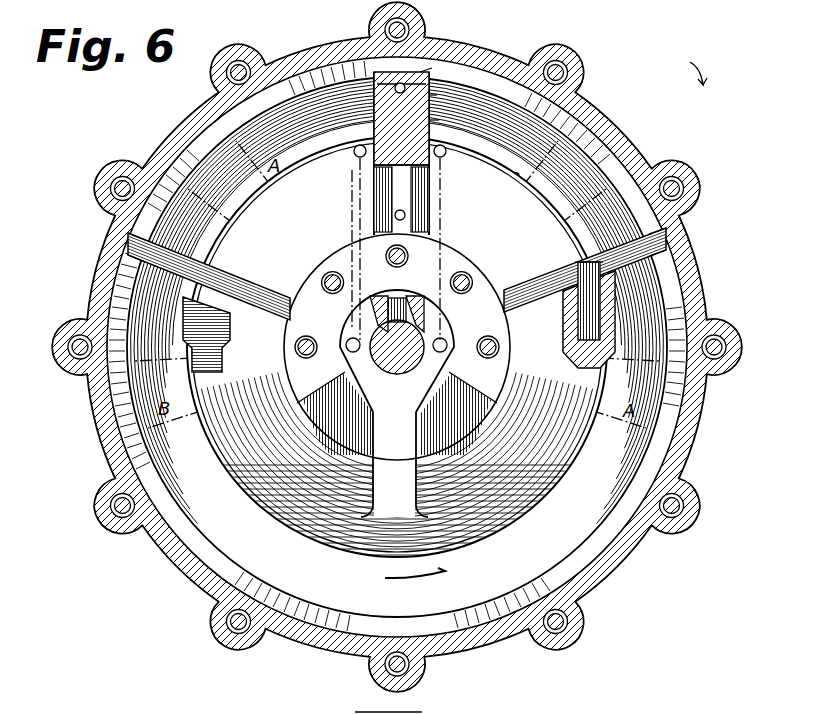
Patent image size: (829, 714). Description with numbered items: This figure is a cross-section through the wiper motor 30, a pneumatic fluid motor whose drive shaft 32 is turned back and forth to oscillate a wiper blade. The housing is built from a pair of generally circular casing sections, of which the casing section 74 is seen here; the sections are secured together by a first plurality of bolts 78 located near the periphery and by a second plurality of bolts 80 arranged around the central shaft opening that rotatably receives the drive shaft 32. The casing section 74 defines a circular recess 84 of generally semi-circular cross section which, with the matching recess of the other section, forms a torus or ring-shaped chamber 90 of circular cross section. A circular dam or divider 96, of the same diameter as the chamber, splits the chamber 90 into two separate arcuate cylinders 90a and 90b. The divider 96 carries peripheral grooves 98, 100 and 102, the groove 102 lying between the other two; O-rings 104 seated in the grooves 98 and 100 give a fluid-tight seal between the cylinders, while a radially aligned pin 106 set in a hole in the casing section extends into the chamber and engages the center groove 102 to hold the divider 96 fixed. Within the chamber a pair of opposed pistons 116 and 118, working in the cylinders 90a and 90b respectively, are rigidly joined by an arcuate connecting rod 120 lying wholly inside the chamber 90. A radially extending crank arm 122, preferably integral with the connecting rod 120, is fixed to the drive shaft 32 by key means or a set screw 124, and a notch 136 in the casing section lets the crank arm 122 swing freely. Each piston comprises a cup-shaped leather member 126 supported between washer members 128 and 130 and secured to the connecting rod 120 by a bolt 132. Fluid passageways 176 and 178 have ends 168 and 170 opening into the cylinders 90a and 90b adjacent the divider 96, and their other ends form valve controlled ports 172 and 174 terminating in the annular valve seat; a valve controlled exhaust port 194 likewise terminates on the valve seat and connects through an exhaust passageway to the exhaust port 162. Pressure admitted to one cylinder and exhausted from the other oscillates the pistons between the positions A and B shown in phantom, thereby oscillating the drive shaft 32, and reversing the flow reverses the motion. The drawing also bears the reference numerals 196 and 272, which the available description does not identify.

The wiper motor 30 is at (692, 64).
The drive shaft 32 is at (412, 365).
The casing section 74 is at (622, 572).
The bolts 78 is at (568, 65).
The bolts 80 is at (321, 272).
The circular recess 84 is at (630, 475).
The ring-shaped chamber 90 is at (507, 567).
The arcuate cylinder 90a is at (330, 163).
The arcuate cylinder 90b is at (510, 136).
The divider 96 is at (440, 120).
The peripheral groove 98 is at (388, 72).
The peripheral groove 100 is at (432, 95).
The center groove 102 is at (425, 72).
The O-rings 104 is at (447, 33).
The radially aligned pin 106 is at (352, 78).
The piston 116 is at (669, 266).
The piston 118 is at (155, 264).
The arcuate connecting rod 120 is at (330, 540).
The crank arm 122 is at (416, 440).
The set screw 124 is at (372, 382).
The cup-shaped leather member 126 is at (219, 268).
The washer member 128 is at (596, 264).
The washer member 130 is at (185, 302).
The bolt 132 is at (592, 312).
The notch 136 is at (329, 437).
The exhaust port 162 is at (429, 131).
The passageway end 168 is at (355, 148).
The passageway end 170 is at (447, 152).
The valve controlled port 172 is at (350, 338).
The valve controlled port 174 is at (446, 338).
The fluid passageway 176 is at (358, 190).
The fluid passageway 178 is at (440, 182).
The valve controlled exhaust port 194 is at (410, 292).
The cylinder wall 196 is at (378, 138).
The housing 272 is at (373, 707).